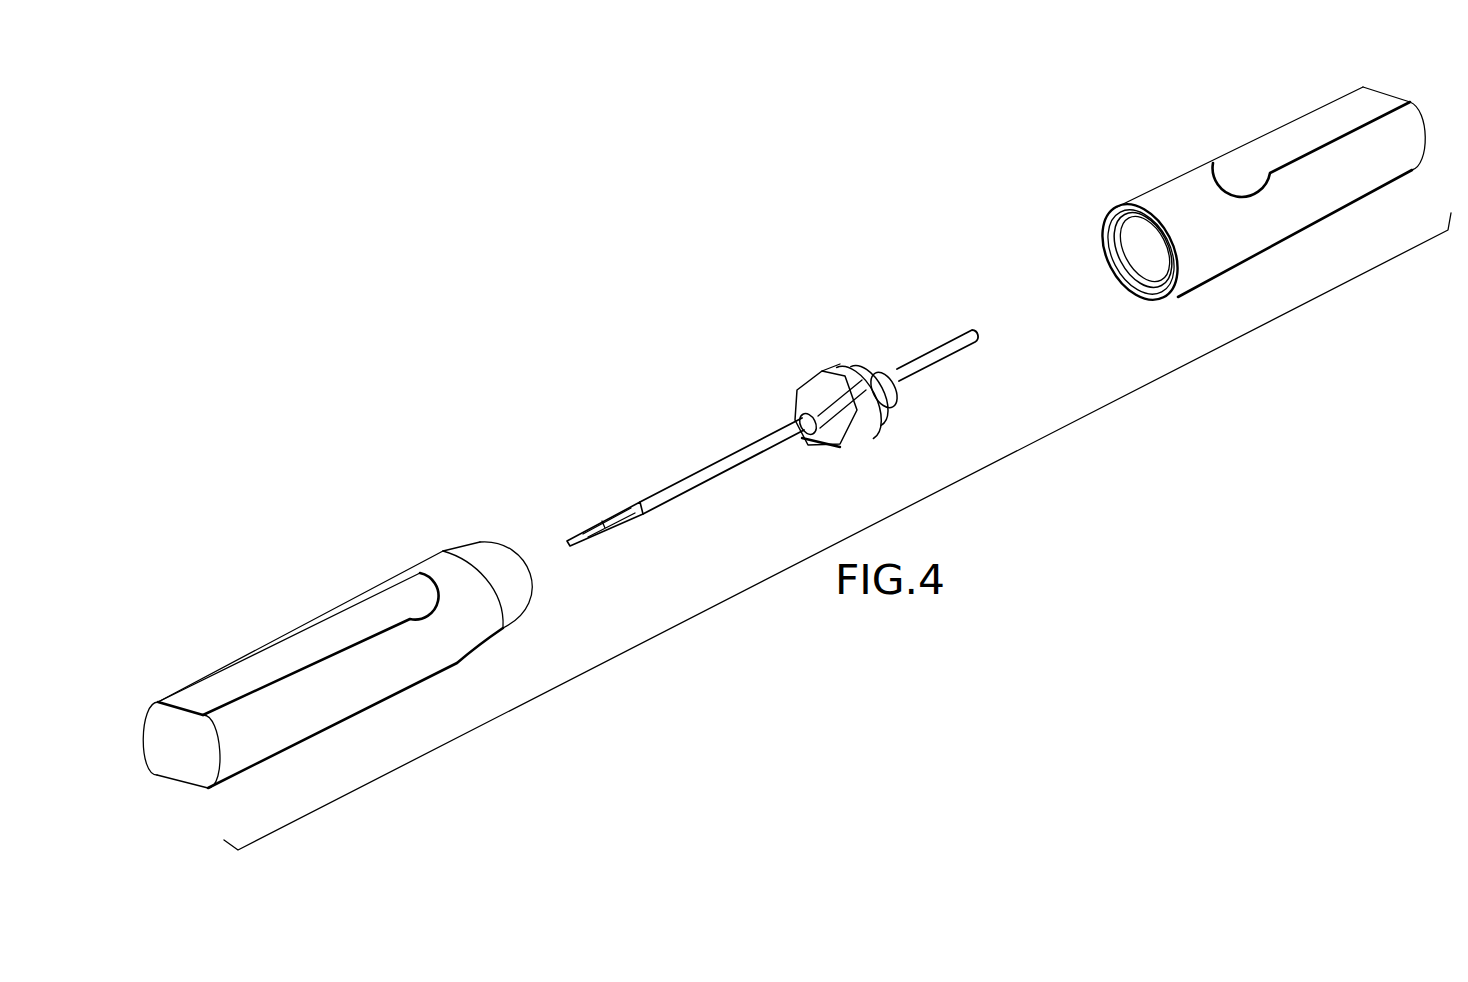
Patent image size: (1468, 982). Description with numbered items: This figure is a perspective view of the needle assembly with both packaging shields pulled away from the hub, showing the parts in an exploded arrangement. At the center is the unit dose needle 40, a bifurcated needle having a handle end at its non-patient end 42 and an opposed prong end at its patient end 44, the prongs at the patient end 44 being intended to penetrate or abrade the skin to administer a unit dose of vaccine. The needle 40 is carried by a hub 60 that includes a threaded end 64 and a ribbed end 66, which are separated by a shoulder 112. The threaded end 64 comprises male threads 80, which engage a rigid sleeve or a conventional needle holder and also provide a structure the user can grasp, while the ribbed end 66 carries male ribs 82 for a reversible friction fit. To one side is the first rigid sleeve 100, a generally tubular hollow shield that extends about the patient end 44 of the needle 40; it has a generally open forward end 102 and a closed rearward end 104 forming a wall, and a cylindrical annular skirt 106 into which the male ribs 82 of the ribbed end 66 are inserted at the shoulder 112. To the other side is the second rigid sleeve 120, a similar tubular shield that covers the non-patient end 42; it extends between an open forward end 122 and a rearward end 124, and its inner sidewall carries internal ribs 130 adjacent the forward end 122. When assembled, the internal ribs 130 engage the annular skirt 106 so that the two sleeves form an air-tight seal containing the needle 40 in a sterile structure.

The unit dose needle 40 is at (750, 455).
The non-patient end 42 is at (947, 361).
The patient end 44 is at (580, 547).
The hub 60 is at (822, 368).
The threaded end 64 is at (890, 403).
The ribbed end 66 is at (847, 433).
The male threads 80 is at (877, 370).
The male ribs 82 is at (795, 397).
The first rigid sleeve 100 is at (347, 688).
The forward end 102 is at (505, 629).
The rearward end 104 is at (197, 762).
The cylindrical annular skirt 106 is at (488, 548).
The shoulder 112 is at (853, 366).
The second rigid sleeve 120 is at (1290, 208).
The forward end 122 is at (1155, 300).
The rearward end 124 is at (1418, 122).
The internal ribs 130 is at (1120, 258).